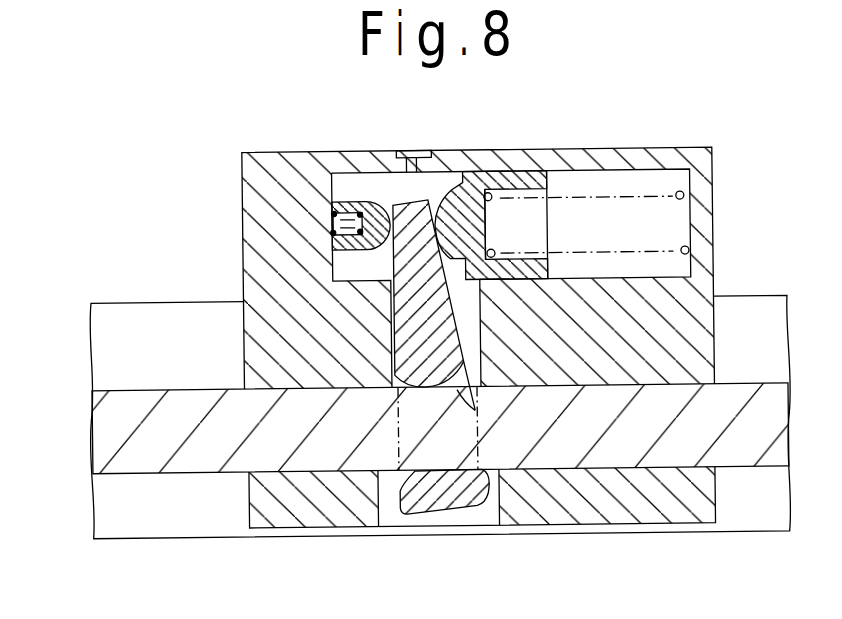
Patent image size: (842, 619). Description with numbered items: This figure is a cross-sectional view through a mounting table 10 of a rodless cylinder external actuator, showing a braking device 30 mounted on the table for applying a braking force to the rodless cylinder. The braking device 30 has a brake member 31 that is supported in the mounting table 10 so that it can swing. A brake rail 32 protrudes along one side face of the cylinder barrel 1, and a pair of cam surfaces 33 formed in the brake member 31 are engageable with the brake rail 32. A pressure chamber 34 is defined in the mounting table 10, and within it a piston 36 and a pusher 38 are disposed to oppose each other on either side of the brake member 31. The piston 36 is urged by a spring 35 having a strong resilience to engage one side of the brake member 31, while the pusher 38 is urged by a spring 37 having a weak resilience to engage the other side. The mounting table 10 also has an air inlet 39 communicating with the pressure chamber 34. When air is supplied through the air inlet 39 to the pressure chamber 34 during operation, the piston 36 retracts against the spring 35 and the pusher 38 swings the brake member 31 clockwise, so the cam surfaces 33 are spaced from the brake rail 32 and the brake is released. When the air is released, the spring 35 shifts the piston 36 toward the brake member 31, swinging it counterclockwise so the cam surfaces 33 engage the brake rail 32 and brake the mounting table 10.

The cylinder barrel 1 is at (135, 315).
The mounting table 10 is at (253, 172).
The braking device 30 is at (386, 197).
The brake member 31 is at (458, 514).
The brake rail 32 is at (195, 467).
The cam surfaces 33 is at (475, 413).
The pressure chamber 34 is at (459, 181).
The spring 35 is at (683, 198).
The piston 36 is at (551, 180).
The spring 37 is at (334, 224).
The pusher 38 is at (351, 203).
The air inlet 39 is at (417, 154).